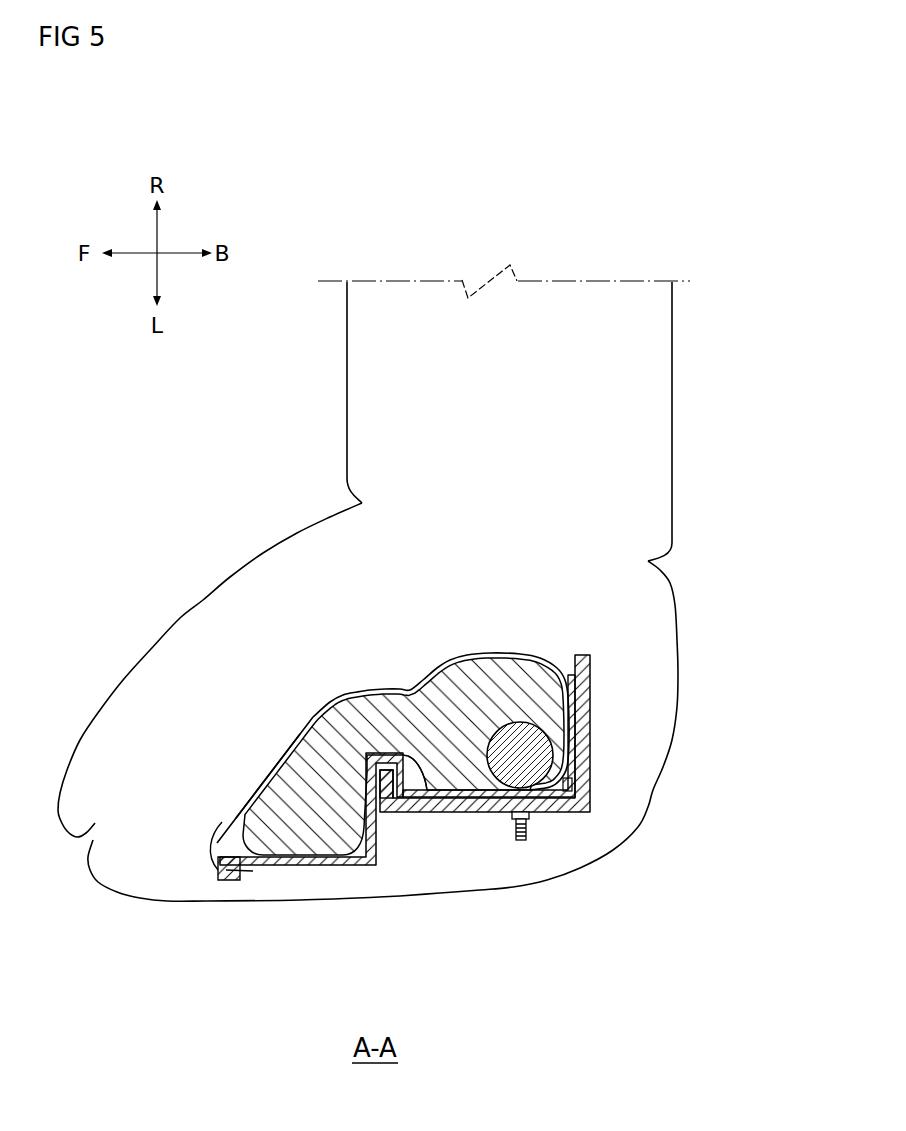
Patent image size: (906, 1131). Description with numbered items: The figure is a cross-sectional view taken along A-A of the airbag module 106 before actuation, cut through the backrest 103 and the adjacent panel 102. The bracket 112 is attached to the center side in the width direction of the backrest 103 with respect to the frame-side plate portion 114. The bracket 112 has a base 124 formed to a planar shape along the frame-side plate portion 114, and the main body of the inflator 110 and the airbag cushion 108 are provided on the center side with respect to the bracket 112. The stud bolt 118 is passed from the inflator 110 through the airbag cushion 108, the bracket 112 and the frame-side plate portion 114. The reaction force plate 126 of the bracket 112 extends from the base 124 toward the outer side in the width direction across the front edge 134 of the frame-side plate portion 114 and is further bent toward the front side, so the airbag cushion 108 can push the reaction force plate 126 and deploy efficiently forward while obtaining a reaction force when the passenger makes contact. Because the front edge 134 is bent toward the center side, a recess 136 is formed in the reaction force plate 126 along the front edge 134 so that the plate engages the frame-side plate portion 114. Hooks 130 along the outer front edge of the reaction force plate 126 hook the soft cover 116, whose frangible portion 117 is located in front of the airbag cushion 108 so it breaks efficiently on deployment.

The pillar panel 102 is at (346, 348).
The backrest 103 is at (672, 371).
The airbag module 106 is at (346, 679).
The airbag cushion 108 is at (286, 751).
The inflator 110 is at (522, 722).
The bracket 112 is at (240, 857).
The frame-side plate portion 114 is at (557, 816).
The soft cover 116 is at (316, 711).
The frangible portion 117 is at (272, 769).
The stud bolt 118 is at (521, 842).
The base 124 is at (473, 800).
The reaction force plate 126 is at (315, 860).
The hooks 130 is at (234, 882).
The front edge 134 is at (385, 762).
The recess 136 is at (413, 765).